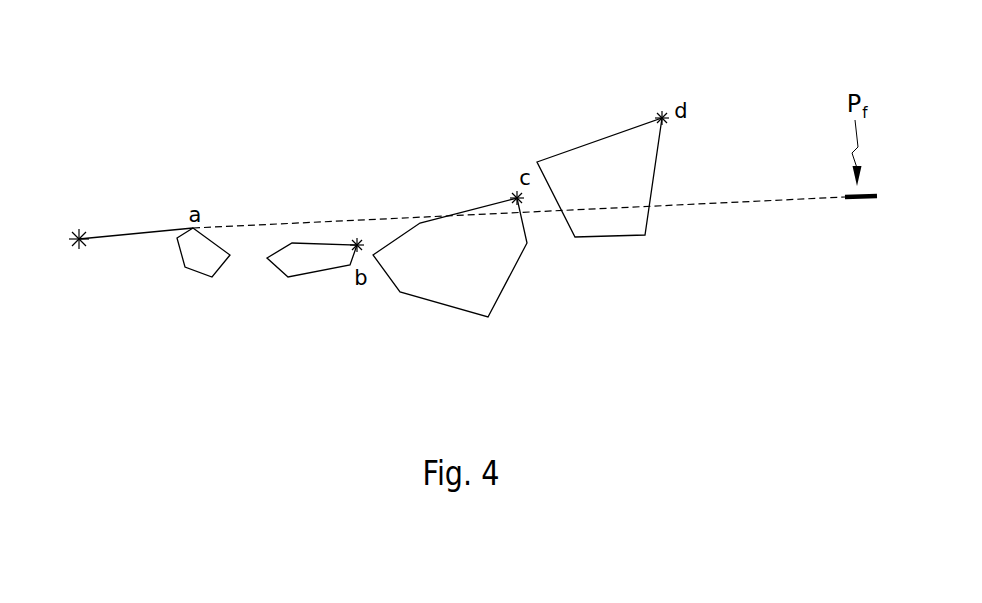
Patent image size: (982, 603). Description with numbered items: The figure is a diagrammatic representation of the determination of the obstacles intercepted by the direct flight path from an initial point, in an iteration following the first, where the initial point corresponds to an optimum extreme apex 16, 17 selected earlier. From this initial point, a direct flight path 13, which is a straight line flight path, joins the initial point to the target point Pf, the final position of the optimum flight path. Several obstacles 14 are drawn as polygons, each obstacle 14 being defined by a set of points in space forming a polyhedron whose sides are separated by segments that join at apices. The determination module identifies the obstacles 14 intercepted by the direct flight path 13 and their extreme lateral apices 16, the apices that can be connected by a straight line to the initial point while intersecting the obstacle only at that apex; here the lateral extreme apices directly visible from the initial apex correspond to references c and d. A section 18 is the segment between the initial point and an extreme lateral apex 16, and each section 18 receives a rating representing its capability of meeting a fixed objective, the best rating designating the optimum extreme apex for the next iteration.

The direct flight path 13 is at (535, 164).
The obstacle 14 is at (418, 258).
The extreme lateral apex 16 is at (523, 142).
The extreme lateral apex 17 is at (65, 182).
The section 18 is at (136, 177).